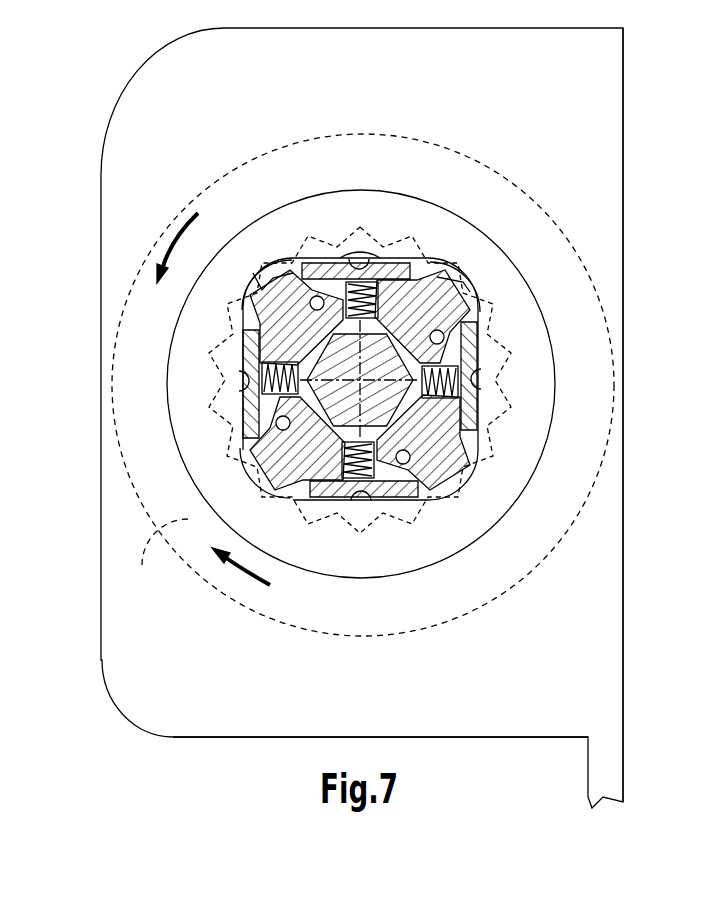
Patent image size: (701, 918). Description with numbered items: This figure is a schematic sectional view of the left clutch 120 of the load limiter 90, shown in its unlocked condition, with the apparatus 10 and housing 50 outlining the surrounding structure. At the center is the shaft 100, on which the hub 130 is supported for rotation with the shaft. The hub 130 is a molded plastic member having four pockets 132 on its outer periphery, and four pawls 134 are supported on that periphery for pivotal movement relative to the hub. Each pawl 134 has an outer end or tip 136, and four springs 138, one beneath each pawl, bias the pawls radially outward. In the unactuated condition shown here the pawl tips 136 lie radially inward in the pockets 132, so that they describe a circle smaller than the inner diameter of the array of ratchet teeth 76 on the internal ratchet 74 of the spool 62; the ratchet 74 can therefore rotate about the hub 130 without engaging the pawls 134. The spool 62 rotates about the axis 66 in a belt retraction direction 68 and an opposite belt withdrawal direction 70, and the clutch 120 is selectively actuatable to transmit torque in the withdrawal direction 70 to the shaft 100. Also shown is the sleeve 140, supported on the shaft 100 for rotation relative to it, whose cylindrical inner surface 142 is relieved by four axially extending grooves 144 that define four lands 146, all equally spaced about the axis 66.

The apparatus 10 is at (183, 750).
The housing 50 is at (130, 730).
The spool 62 is at (198, 580).
The axis 66 is at (463, 468).
The belt retraction direction 68 is at (248, 567).
The belt withdrawal direction 70 is at (178, 242).
The internal ratchet 74 is at (154, 552).
The ratchet teeth 76 is at (500, 335).
The load limiter 90 is at (590, 607).
The shaft 100 is at (333, 425).
The left clutch 120 is at (492, 602).
The hub 130 is at (453, 287).
The pocket 132 is at (402, 256).
The pawl 134 is at (466, 382).
The pawl tip 136 is at (470, 414).
The spring 138 is at (345, 296).
The sleeve 140 is at (500, 243).
The inner surface 142 is at (365, 248).
The groove 144 is at (467, 267).
The land 146 is at (382, 248).